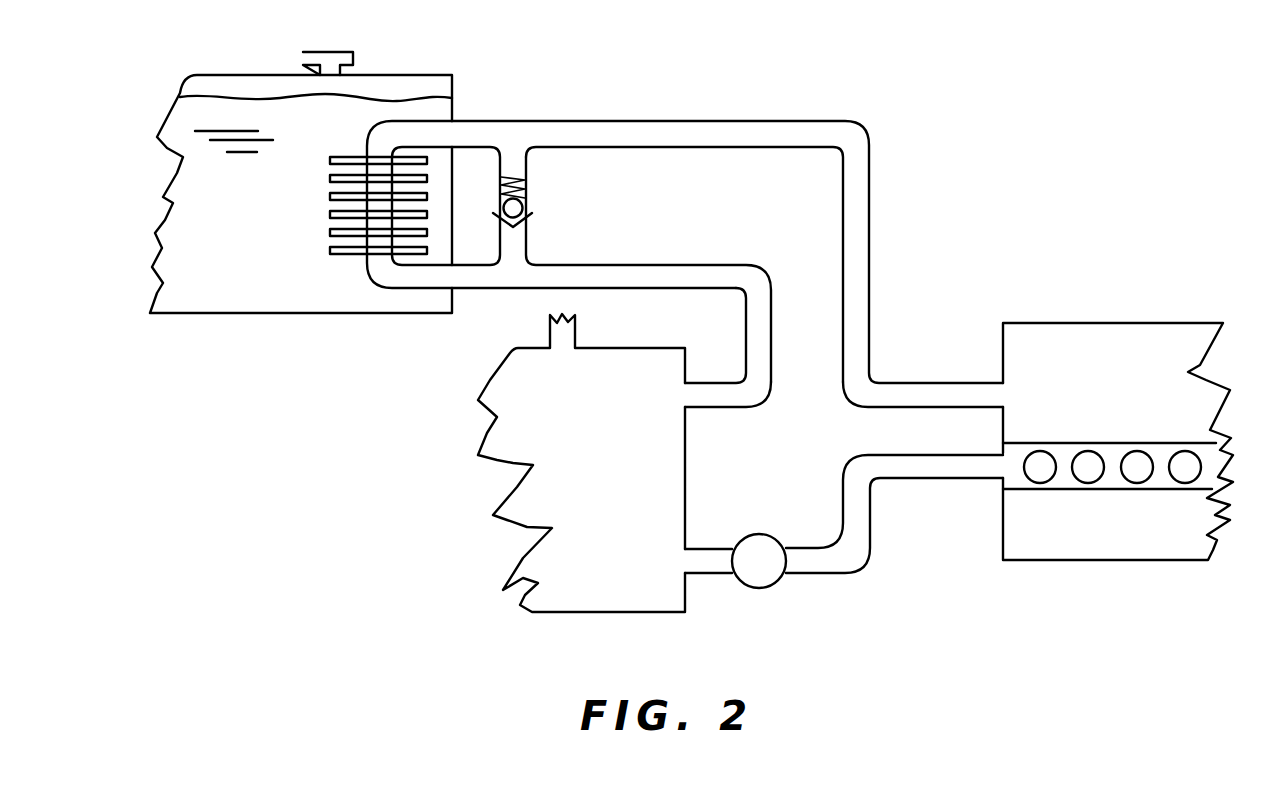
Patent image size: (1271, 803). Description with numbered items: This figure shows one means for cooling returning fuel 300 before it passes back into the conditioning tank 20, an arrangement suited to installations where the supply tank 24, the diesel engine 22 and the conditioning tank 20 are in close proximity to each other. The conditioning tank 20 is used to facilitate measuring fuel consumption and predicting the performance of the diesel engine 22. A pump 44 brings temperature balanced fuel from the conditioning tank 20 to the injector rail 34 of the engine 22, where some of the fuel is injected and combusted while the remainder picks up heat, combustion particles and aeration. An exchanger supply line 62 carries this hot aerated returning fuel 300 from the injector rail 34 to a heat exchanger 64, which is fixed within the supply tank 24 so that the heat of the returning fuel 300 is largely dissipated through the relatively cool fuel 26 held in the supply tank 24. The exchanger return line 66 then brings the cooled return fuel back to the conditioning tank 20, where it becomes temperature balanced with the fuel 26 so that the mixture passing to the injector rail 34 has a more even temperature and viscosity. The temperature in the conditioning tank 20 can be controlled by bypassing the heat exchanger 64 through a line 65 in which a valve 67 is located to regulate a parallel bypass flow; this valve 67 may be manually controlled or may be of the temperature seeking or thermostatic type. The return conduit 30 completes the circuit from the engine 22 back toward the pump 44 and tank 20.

The conditioning tank 20 is at (735, 476).
The diesel engine 22 is at (1201, 313).
The supply tank 24 is at (284, 318).
The fuel 26 is at (208, 288).
The return conduit 30 is at (870, 527).
The injector rail 34 is at (1078, 448).
The pump 44 is at (777, 580).
The exchanger supply line 62 is at (870, 176).
The heat exchanger 64 is at (358, 255).
The bypass line 65 is at (528, 158).
The exchanger return line 66 is at (772, 301).
The valve 67 is at (528, 203).
The returning fuel 300 is at (895, 397).